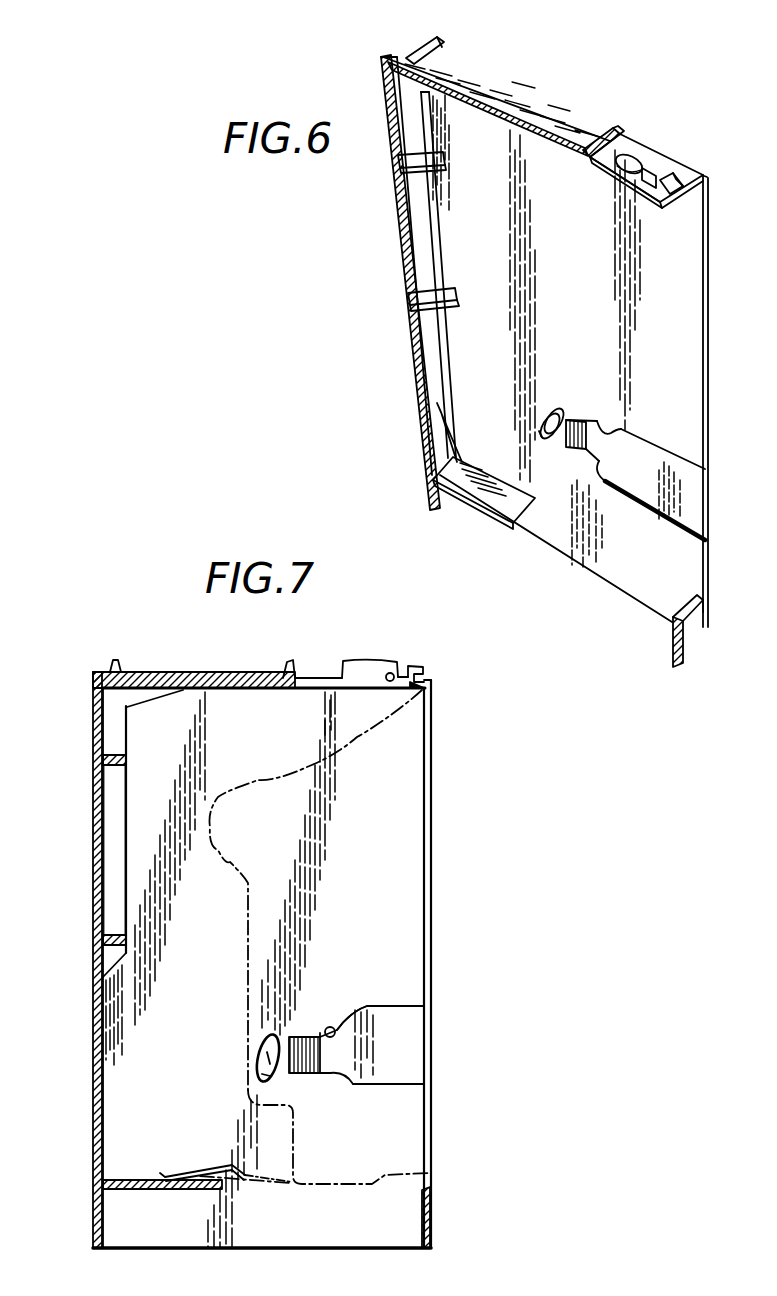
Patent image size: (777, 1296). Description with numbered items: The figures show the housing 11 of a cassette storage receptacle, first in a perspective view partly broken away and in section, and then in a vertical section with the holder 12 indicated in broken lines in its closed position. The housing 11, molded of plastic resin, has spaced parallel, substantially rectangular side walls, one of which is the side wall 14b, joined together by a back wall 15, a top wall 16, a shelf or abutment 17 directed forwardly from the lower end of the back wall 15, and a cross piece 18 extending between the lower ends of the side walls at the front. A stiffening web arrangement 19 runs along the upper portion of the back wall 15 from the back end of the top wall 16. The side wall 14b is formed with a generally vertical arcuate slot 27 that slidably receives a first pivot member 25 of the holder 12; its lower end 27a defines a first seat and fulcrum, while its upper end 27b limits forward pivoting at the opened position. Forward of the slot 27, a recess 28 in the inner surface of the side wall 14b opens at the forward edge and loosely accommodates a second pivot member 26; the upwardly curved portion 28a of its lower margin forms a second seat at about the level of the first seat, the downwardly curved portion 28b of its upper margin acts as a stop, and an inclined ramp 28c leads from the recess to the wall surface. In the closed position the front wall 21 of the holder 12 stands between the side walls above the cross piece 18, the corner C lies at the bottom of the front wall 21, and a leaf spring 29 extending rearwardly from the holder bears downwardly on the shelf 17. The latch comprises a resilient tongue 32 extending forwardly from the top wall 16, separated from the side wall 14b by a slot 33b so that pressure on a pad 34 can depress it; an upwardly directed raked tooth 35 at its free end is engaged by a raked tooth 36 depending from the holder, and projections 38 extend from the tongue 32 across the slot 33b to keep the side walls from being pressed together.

In FIG. 6, the housing 11 is at (714, 297).
In FIG. 7, the housing 11 is at (96, 958).
In FIG. 7, the holder 12 is at (262, 779).
In FIG. 6, the side wall 14b is at (688, 347).
In FIG. 7, the side wall 14b is at (122, 846).
In FIG. 6, the back wall 15 is at (411, 354).
In FIG. 7, the back wall 15 is at (93, 1041).
In FIG. 6, the top wall 16 is at (531, 95).
In FIG. 7, the top wall 16 is at (222, 672).
In FIG. 6, the shelf or abutment 17 is at (504, 522).
In FIG. 7, the shelf or abutment 17 is at (144, 1190).
In FIG. 6, the cross piece 18 is at (697, 640).
In FIG. 7, the cross piece 18 is at (431, 1204).
In FIG. 6, the stiffening web arrangement 19 is at (420, 262).
In FIG. 7, the stiffening web arrangement 19 is at (102, 797).
In FIG. 7, the front wall 21 is at (421, 830).
In FIG. 7, the first pivot member 25 is at (273, 1070).
In FIG. 7, the second pivot member 26 is at (336, 1027).
In FIG. 6, the arcuate slot 27 is at (564, 415).
In FIG. 7, the arcuate slot 27 is at (237, 1045).
In FIG. 6, the lower end of slot 27a is at (556, 443).
In FIG. 7, the lower end of slot 27a is at (258, 1078).
In FIG. 6, the upper end of slot 27b is at (567, 412).
In FIG. 7, the upper end of slot 27b is at (268, 1038).
In FIG. 6, the recess 28 is at (651, 471).
In FIG. 7, the recess 28 is at (389, 1038).
In FIG. 6, the upwardly curved portion 28a is at (618, 488).
In FIG. 7, the upwardly curved portion 28a is at (346, 1085).
In FIG. 6, the downwardly curved portion 28b is at (623, 433).
In FIG. 7, the downwardly curved portion 28b is at (342, 1010).
In FIG. 6, the inclined ramp 28c is at (592, 460).
In FIG. 7, the inclined ramp 28c is at (308, 1036).
In FIG. 7, the leaf spring 29 is at (272, 1190).
In FIG. 6, the resilient tongue 32 is at (604, 168).
In FIG. 7, the resilient tongue 32 is at (291, 672).
In FIG. 6, the slot 33b is at (626, 130).
In FIG. 6, the pad 34 is at (646, 158).
In FIG. 7, the pad 34 is at (362, 662).
In FIG. 6, the latch element or raked tooth 35 is at (686, 172).
In FIG. 7, the latch element or raked tooth 35 is at (420, 683).
In FIG. 7, the latch element or raked tooth 36 is at (421, 668).
In FIG. 7, the projection 38 is at (392, 672).
In FIG. 7, the corner C is at (431, 1178).